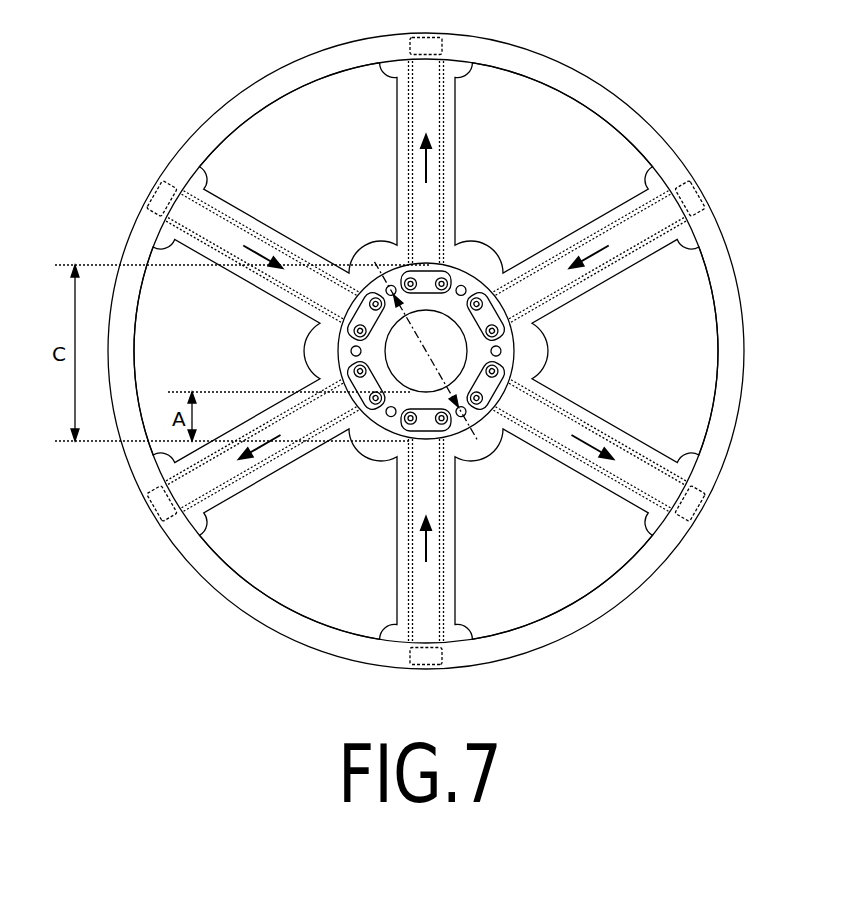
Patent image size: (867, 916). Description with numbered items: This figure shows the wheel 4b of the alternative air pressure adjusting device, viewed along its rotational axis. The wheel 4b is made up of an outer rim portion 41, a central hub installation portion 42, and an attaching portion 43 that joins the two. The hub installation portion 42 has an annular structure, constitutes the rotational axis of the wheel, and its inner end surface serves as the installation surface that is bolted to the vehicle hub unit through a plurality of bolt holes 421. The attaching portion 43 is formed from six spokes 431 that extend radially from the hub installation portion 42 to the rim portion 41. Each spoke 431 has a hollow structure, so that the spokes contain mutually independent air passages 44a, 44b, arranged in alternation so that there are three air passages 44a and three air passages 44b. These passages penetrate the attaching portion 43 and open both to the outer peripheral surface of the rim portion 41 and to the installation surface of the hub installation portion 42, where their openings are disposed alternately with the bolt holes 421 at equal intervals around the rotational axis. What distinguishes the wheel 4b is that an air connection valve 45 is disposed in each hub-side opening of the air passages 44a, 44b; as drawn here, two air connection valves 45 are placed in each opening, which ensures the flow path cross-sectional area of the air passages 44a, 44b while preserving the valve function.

The wheel 4b is at (598, 60).
The rim portion 41 is at (667, 153).
The hub installation portion 42 is at (527, 360).
The bolt holes 421 is at (377, 253).
The attaching portion 43 is at (372, 178).
The spokes 431 is at (397, 126).
The air passage 44a is at (458, 135).
The air passage 44b is at (247, 217).
The air connection valve 45 is at (410, 196).